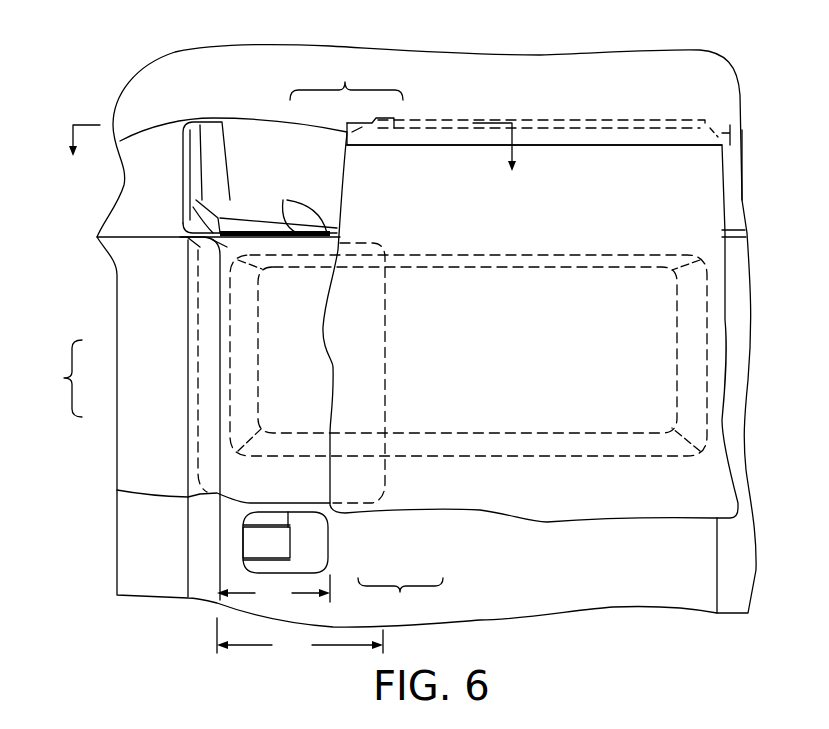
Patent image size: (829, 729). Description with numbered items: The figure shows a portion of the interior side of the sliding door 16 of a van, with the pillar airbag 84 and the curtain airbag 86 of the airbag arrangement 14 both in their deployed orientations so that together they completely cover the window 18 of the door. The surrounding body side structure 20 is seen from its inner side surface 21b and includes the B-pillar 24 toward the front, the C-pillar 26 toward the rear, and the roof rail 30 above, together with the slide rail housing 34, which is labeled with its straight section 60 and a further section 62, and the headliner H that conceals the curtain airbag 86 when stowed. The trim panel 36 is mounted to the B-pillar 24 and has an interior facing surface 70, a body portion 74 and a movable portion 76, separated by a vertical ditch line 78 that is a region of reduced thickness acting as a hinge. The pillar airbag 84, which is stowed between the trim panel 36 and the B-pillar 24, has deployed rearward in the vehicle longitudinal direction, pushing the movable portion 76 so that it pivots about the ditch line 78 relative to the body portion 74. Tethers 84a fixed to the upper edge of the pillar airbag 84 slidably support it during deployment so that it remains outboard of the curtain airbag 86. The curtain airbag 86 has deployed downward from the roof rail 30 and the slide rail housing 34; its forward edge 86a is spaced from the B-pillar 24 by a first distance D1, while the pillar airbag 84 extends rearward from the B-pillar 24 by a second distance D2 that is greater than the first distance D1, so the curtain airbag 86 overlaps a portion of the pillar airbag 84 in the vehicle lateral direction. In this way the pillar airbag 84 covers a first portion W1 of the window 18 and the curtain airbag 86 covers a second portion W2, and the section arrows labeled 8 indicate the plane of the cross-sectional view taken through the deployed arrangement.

The airbag arrangement 14 is at (400, 595).
The sliding door 16 is at (648, 565).
The window 18 is at (632, 355).
The body side structure 20 is at (263, 116).
The inner side surface 21b is at (143, 206).
The B-pillar 24 is at (110, 463).
The C-pillar 26 is at (735, 592).
The roof rail 30 is at (730, 203).
The slide rail housing 34 is at (346, 76).
The trim panel 36 is at (57, 378).
The straight section 60 is at (390, 160).
The latch bracket 62 is at (300, 155).
The interior facing surface 70 is at (152, 325).
The body portion 74 is at (143, 352).
The movable portion 76 is at (207, 417).
The vertical ditch line 78 is at (188, 443).
The pillar airbag 84 is at (313, 478).
The tethers 84a is at (287, 200).
The curtain airbag 86 is at (672, 178).
The forward edge 86a is at (323, 322).
The headliner H is at (625, 85).
The section line 8- 8 is at (292, 165).
The first portion W1 is at (300, 405).
The second portion W2 is at (570, 403).
The first distance D1 is at (273, 592).
The second distance D2 is at (300, 640).